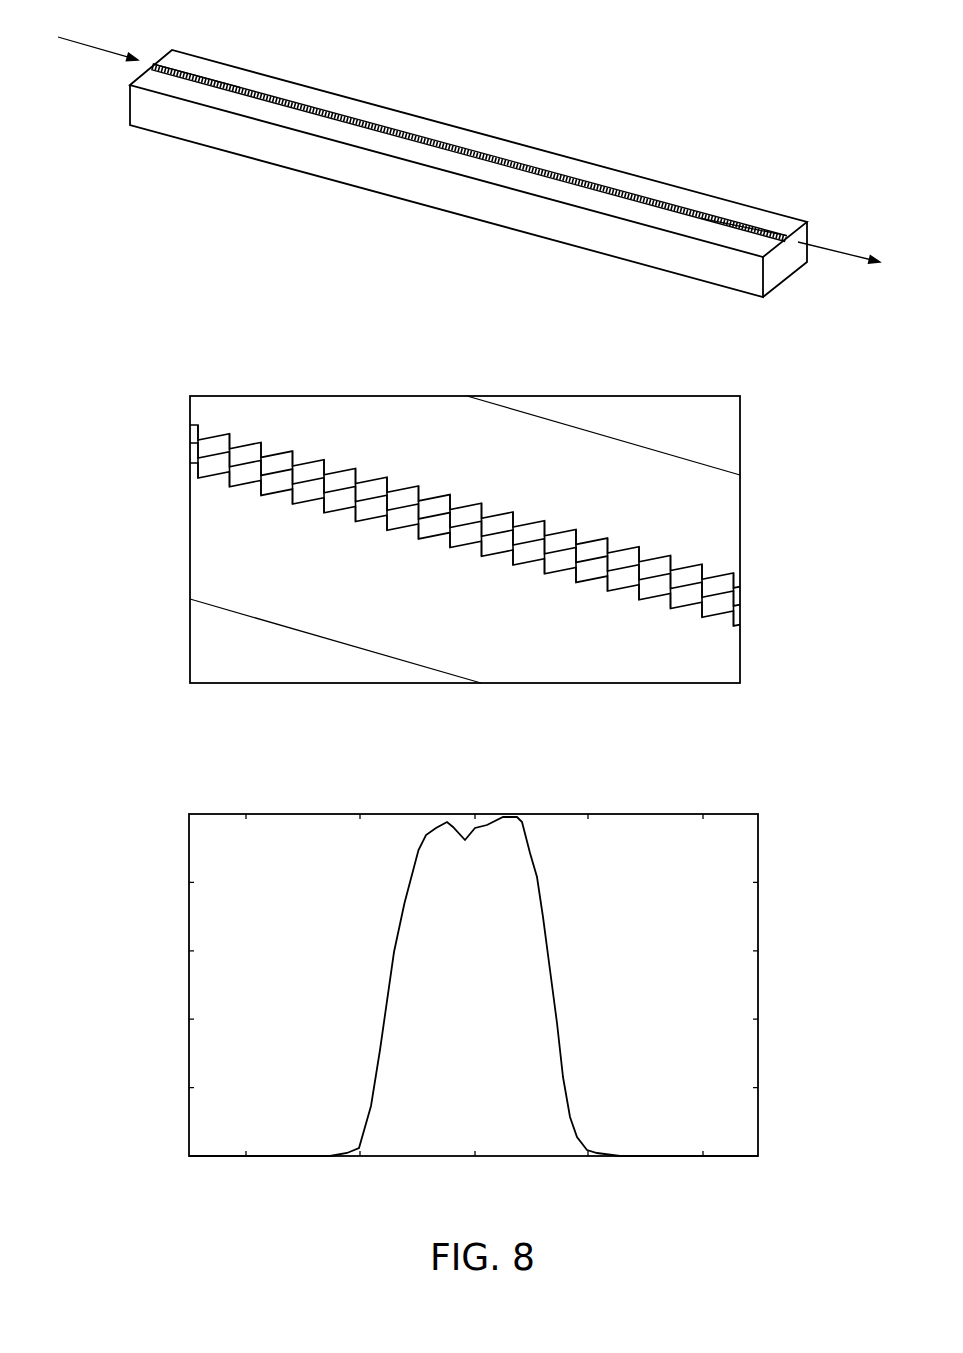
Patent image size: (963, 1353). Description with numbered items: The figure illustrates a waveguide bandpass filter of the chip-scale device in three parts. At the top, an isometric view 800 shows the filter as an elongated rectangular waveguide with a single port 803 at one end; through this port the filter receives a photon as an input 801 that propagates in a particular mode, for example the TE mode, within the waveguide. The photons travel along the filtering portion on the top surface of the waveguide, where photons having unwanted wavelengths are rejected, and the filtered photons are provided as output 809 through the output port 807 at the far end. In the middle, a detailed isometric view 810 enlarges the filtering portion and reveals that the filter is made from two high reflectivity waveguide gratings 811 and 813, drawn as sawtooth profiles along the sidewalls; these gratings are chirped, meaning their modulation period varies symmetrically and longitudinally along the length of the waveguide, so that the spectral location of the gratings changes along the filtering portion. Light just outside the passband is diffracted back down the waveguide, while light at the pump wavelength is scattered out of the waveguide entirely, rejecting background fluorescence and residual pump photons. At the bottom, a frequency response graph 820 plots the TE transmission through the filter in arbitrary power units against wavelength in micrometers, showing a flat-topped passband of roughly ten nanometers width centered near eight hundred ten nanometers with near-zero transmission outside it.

The isometric view 800 is at (665, 130).
The input 801 is at (73, 42).
The port 803 is at (203, 78).
The output port 807 is at (757, 223).
The output 809 is at (848, 253).
The detailed isometric view 810 is at (748, 397).
The waveguide grating 811 is at (190, 427).
The waveguide grating 813 is at (190, 473).
The frequency response graph 820 is at (124, 836).